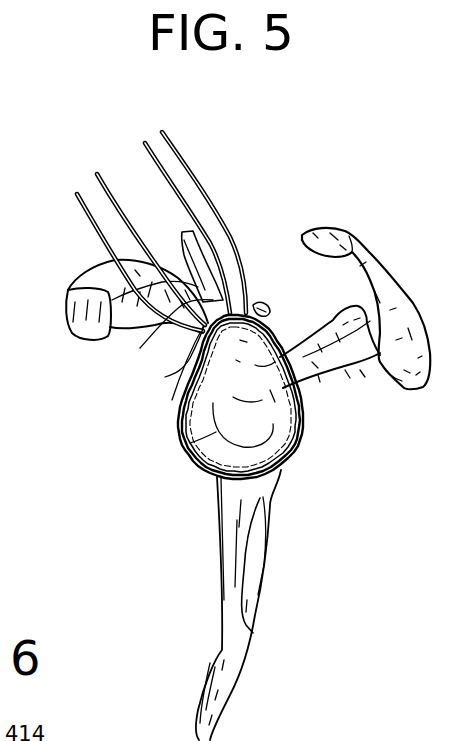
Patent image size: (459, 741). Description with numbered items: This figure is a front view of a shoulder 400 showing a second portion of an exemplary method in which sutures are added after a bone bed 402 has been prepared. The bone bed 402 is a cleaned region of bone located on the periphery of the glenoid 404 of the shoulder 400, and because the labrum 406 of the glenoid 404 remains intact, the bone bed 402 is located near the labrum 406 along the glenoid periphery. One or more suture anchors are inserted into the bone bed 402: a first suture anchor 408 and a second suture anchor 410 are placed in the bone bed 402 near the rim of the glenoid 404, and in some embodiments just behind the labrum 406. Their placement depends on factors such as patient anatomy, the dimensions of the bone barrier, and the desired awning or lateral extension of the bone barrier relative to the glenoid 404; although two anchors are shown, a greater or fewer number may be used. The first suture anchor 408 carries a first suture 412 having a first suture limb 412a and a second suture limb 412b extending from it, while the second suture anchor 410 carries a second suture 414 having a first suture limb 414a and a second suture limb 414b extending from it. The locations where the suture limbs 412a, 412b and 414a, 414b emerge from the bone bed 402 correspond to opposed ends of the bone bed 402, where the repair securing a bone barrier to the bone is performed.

The shoulder 400 is at (372, 248).
The bone bed 402 is at (140, 348).
The glenoid 404 is at (190, 458).
The labrum 406 is at (304, 410).
The first suture anchor 408 is at (165, 377).
The second suture anchor 410 is at (263, 316).
The first suture 412 is at (90, 259).
The first suture limb 412a is at (77, 208).
The second suture limb 412b is at (111, 188).
The second suture 414 is at (204, 202).
The first suture limb 414a is at (180, 157).
The second suture limb 414b is at (152, 160).